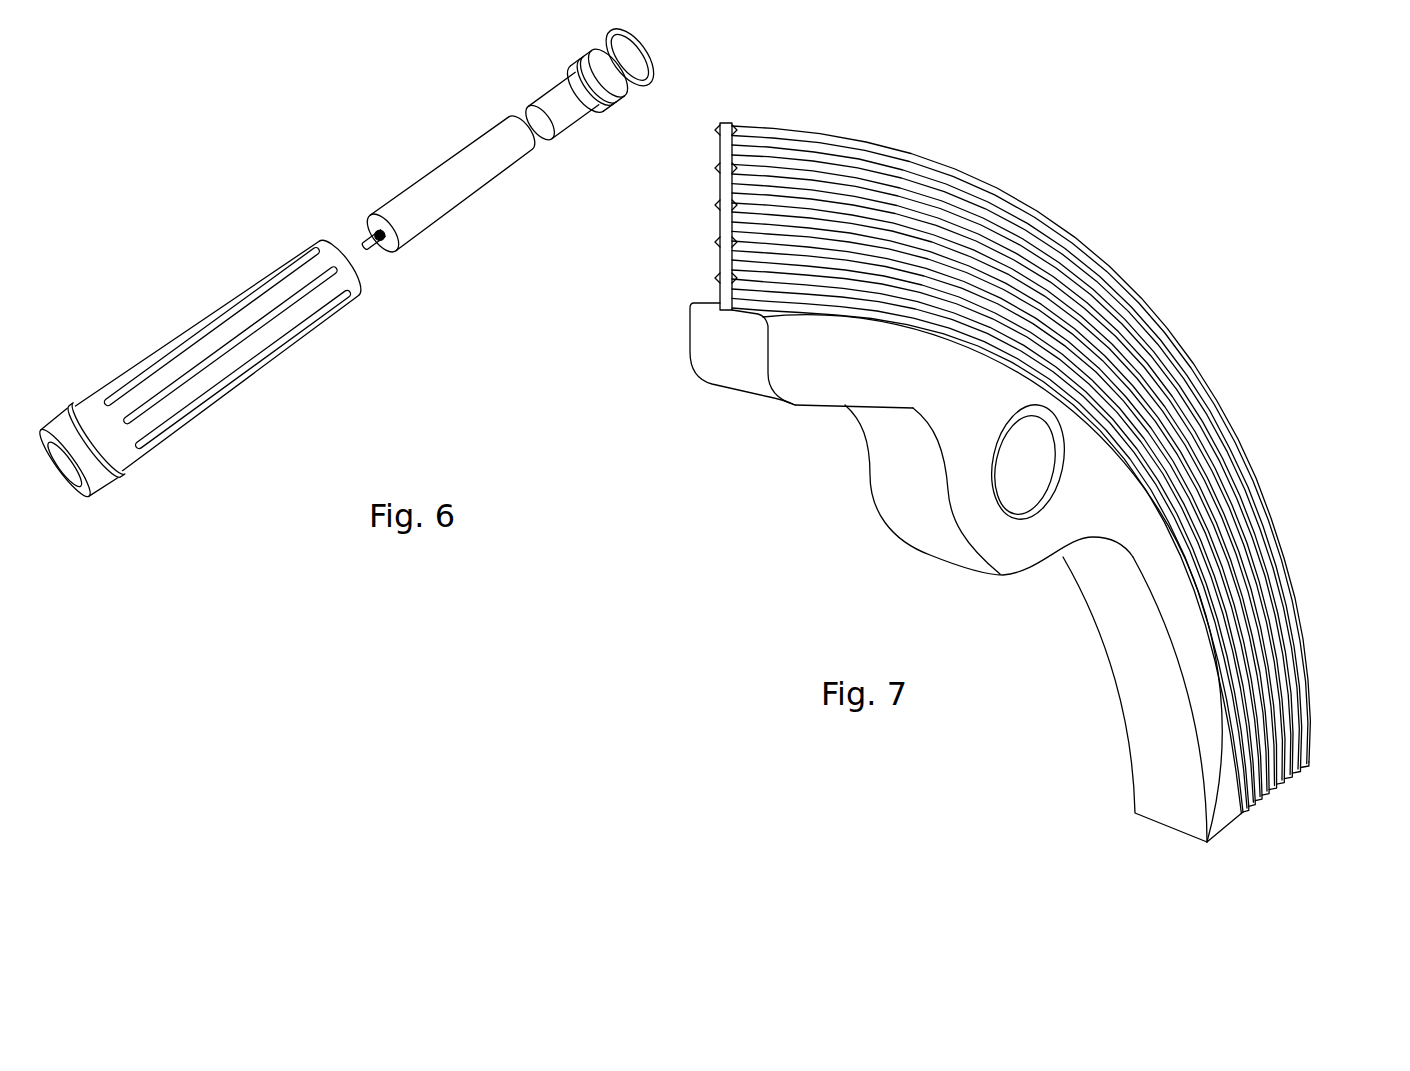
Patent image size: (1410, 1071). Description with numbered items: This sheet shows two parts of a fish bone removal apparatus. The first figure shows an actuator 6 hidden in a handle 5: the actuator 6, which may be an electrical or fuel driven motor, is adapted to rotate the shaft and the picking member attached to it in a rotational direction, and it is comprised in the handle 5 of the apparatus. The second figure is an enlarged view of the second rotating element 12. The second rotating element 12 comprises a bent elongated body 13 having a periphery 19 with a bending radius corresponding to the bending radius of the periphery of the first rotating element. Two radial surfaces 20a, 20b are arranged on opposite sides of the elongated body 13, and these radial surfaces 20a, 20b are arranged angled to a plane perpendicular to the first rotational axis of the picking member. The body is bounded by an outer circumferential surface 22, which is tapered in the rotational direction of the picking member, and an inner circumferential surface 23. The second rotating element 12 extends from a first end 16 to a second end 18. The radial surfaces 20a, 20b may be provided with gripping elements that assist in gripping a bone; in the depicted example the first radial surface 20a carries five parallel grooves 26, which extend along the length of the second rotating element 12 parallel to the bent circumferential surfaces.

In FIG. 6, the handle 5 is at (170, 304).
In FIG. 6, the actuator 6 is at (440, 177).
In FIG. 7, the second rotating element 12 is at (1065, 448).
In FIG. 7, the bent elongated body 13 is at (1205, 442).
In FIG. 7, the first end 16 is at (689, 168).
In FIG. 7, the second end 18 is at (1330, 754).
In FIG. 7, the periphery 19 is at (1015, 196).
In FIG. 7, the first radial surface 20a is at (828, 163).
In FIG. 7, the second radial surface 20b is at (716, 176).
In FIG. 7, the outer circumferential surface 22 is at (950, 163).
In FIG. 7, the inner circumferential surface 23 is at (1142, 684).
In FIG. 7, the grooves 26 is at (1047, 317).